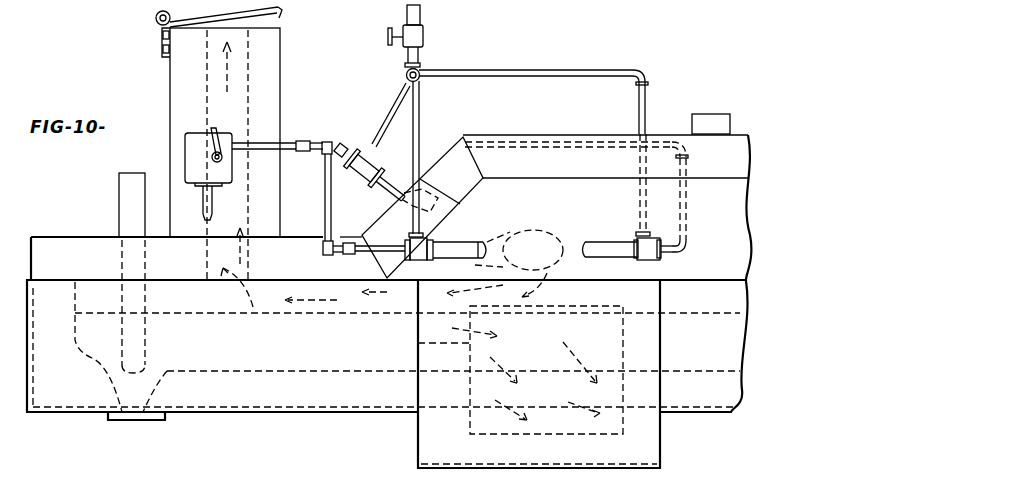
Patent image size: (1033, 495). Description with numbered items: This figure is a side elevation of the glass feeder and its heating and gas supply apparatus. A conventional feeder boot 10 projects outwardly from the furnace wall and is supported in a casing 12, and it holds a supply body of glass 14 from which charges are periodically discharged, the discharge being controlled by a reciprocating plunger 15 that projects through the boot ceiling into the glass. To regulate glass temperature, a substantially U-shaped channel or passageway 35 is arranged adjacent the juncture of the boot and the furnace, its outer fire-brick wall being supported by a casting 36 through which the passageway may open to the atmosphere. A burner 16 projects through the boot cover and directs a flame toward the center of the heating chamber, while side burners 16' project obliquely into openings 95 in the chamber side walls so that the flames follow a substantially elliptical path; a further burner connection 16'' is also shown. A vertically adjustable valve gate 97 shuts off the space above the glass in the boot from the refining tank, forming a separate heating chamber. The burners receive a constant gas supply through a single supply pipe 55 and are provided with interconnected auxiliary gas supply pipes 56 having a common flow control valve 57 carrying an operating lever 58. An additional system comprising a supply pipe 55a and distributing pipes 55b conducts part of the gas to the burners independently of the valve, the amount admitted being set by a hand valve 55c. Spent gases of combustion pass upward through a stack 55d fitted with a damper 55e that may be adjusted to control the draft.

The feeder boot 10 is at (178, 393).
The casing 12 is at (285, 412).
The supply body of glass 14 is at (364, 316).
The reciprocating plunger 15 is at (122, 201).
The burner 16 is at (406, 207).
The side burner 16' is at (457, 242).
The branch pipe 16'' is at (629, 257).
The U-shaped channel or passageway 35 is at (560, 430).
The casting 36 is at (661, 440).
The supply pipe 55 is at (273, 142).
The supply pipe 55a is at (423, 15).
The distributing pipes 55b is at (418, 80).
The hand valve 55c is at (390, 37).
The stack 55d is at (274, 67).
The damper 55e is at (282, 11).
The auxiliary gas supply pipes 56 is at (331, 211).
The flow control valve 57 is at (233, 170).
The operating lever 58 is at (217, 130).
The openings 95 is at (547, 233).
The valve gate 97 is at (697, 123).